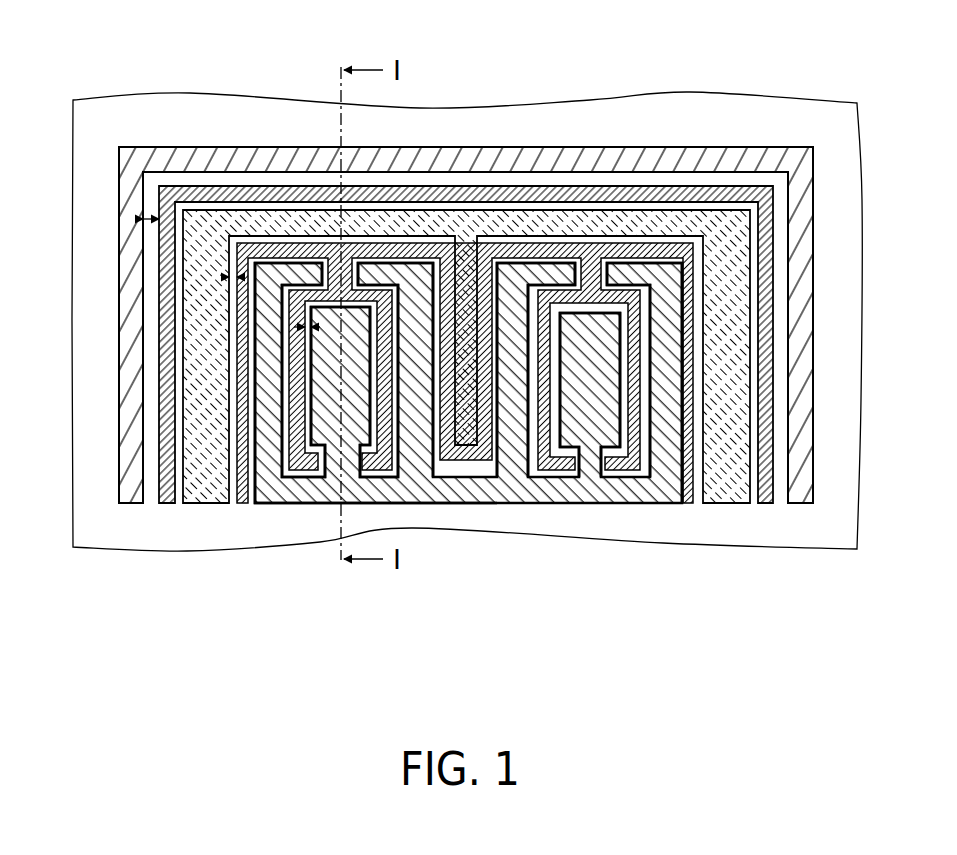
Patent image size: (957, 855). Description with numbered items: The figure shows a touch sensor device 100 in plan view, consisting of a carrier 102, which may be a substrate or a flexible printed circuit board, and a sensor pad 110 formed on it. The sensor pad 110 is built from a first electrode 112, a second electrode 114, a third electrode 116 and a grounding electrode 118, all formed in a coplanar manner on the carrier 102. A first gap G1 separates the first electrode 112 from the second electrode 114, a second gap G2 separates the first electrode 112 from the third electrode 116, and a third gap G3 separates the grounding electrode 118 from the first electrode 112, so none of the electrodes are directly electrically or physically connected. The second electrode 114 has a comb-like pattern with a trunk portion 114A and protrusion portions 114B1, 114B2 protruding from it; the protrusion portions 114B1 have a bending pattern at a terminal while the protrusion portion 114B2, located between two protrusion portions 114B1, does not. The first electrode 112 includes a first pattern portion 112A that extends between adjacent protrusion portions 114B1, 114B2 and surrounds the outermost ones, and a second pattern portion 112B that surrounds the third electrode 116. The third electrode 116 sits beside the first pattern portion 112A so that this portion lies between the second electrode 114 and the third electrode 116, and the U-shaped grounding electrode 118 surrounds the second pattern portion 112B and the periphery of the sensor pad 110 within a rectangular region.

The touch sensor device 100 is at (483, 400).
The carrier 102 is at (705, 532).
The sensor pad 110 is at (423, 428).
The first electrode 112 is at (433, 421).
The first pattern portion 112A is at (293, 423).
The second pattern portion 112B is at (167, 482).
The second electrode 114 is at (333, 413).
The trunk portion 114A is at (466, 490).
The protrusion portion 114B1 is at (593, 427).
The protrusion portion 114B2 is at (518, 440).
The third electrode 116 is at (212, 480).
The grounding electrode 118 is at (133, 472).
The first gap G1 is at (307, 327).
The second gap G2 is at (233, 277).
The third gap G3 is at (149, 219).